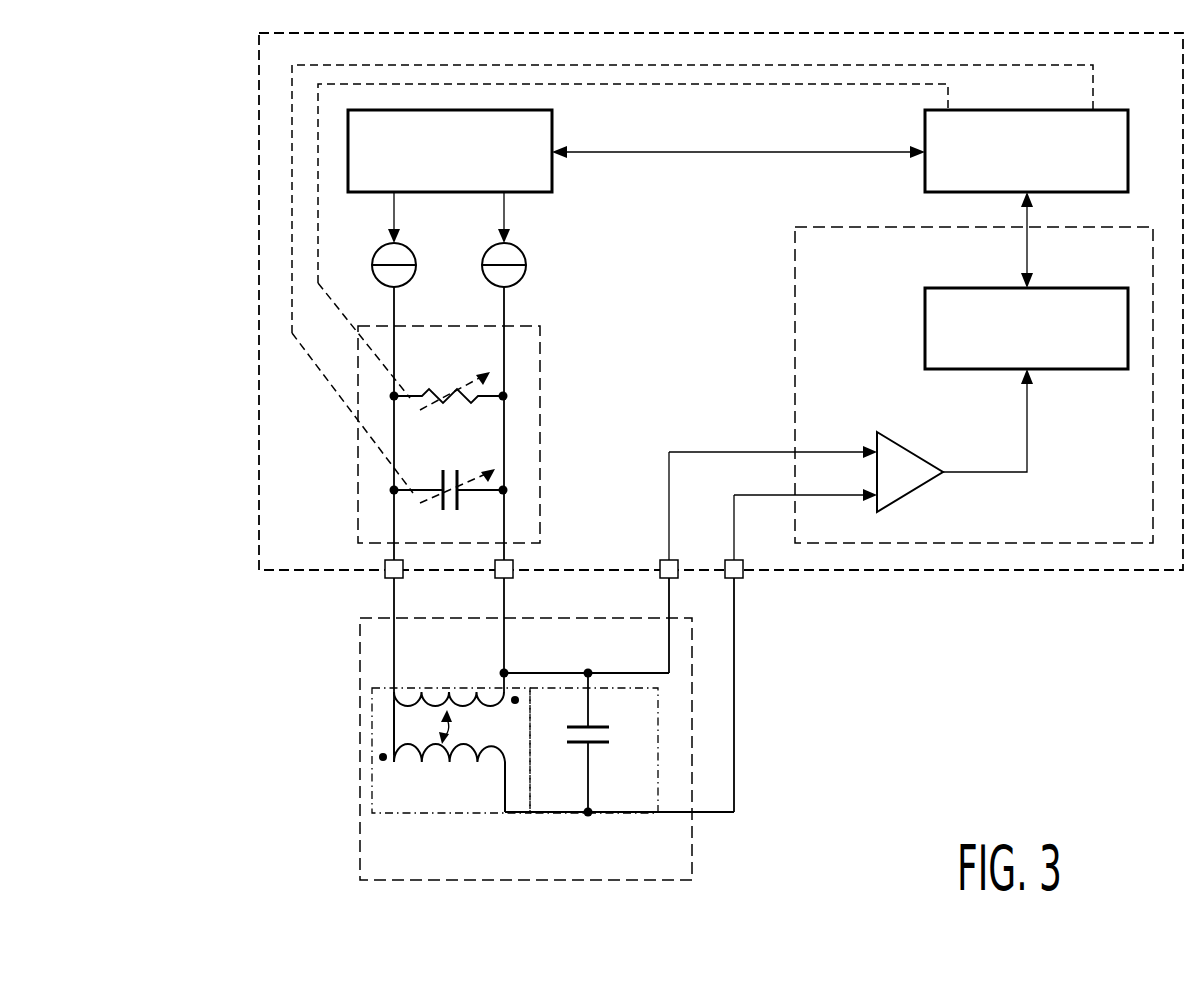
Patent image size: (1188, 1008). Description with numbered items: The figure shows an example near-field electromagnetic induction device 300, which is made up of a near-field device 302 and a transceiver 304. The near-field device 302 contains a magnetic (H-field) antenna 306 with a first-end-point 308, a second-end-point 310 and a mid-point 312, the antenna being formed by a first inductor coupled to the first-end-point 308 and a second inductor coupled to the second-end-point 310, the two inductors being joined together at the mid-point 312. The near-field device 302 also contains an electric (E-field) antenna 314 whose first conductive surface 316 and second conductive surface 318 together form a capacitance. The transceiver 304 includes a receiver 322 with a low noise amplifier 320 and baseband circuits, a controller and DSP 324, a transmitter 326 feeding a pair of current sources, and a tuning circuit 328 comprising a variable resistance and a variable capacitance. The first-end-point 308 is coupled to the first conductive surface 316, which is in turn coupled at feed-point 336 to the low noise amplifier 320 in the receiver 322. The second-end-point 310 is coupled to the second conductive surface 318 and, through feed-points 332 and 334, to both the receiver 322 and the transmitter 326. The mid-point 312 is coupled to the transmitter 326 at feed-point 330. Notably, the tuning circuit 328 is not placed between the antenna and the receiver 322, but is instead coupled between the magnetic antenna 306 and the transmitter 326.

The near-field electromagnetic induction device 300 is at (138, 138).
The near-field device 302 is at (360, 832).
The transceiver 304 is at (259, 382).
The magnetic antenna 306 is at (438, 752).
The first-end-point 308 is at (505, 812).
The second-end-point 310 is at (483, 697).
The mid-point 312 is at (394, 728).
The electric antenna 314 is at (594, 773).
The first conductive surface 316 is at (598, 743).
The second conductive surface 318 is at (598, 726).
The LNA 320 is at (909, 437).
The receiver 322 is at (911, 385).
The controller & DSP 324 is at (925, 181).
The transmitter 326 is at (553, 177).
The tuning circuit 328 is at (540, 393).
The feed-point 330 is at (385, 580).
The feed-point 332 is at (496, 580).
The feed-point 334 is at (661, 580).
The feed-point 336 is at (743, 580).